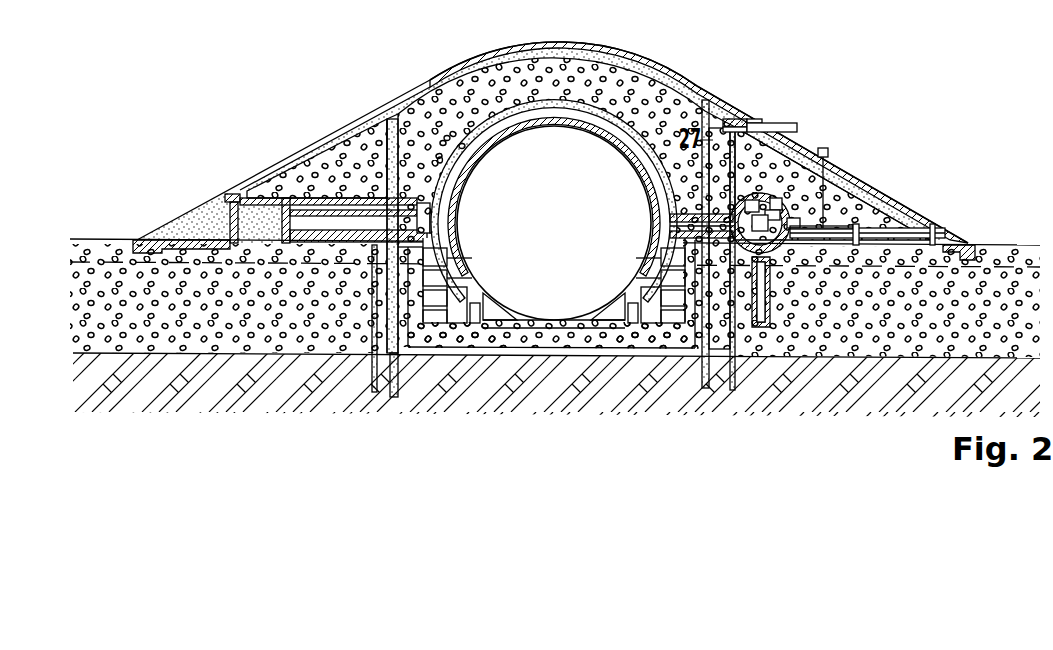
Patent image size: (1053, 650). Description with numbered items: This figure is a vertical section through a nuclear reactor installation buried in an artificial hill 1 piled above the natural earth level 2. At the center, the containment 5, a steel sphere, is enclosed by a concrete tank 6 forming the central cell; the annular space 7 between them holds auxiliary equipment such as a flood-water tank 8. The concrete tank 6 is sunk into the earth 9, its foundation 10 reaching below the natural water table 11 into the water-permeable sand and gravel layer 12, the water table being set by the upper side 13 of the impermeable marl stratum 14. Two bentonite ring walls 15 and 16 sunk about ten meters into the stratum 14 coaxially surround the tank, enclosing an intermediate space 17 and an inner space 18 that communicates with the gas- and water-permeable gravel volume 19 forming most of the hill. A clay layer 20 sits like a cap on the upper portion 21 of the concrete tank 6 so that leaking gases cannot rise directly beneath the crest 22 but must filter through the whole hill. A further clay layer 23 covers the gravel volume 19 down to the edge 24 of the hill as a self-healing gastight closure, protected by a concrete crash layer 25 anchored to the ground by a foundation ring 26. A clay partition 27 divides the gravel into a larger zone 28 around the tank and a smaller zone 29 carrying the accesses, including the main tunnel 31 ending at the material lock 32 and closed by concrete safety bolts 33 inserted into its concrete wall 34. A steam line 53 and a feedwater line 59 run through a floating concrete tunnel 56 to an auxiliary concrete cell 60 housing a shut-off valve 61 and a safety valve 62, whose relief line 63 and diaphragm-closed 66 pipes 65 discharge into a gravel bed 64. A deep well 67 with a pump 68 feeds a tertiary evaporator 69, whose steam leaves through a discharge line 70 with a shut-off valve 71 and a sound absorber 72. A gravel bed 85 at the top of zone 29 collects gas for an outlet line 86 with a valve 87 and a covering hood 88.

The hill 1 is at (402, 100).
The natural earth level 2 is at (125, 238).
The containment 5 is at (522, 132).
The concrete tank 6 is at (600, 125).
The annular space 7 is at (640, 270).
The flood-water tank 8 is at (473, 287).
The earth 9 is at (159, 303).
The foundation 10 is at (393, 340).
The natural water table 11 is at (93, 262).
The sand and gravel layer 12 is at (555, 294).
The upper side of marl stratum 13 is at (262, 355).
The marl stratum 14 is at (308, 370).
The ring wall 15 is at (374, 393).
The ring wall 16 is at (397, 397).
The intermediate space 17 is at (373, 318).
The inner space 18 is at (372, 297).
The gravel volume 19 is at (533, 78).
The clay layer 20 is at (502, 118).
The upper portion of concrete tank 21 is at (487, 140).
The crest of hill 22 is at (607, 46).
The clay layer 23 is at (488, 54).
The edge of hill 24 is at (907, 223).
The concrete layer 25 is at (672, 75).
The foundation ring 26 is at (965, 247).
The vertical partition 27 is at (398, 144).
The larger zone 28 is at (452, 133).
The smaller zone 29 is at (720, 163).
The main tunnel 31 is at (313, 198).
The material lock 32 is at (470, 233).
The safety bolt 33 is at (232, 195).
The concrete wall of main tunnel 34 is at (272, 250).
The steam line 53 is at (787, 238).
The tunnel 56 is at (857, 227).
The feedwater line 59 is at (812, 240).
The concrete cell 60 is at (773, 190).
The shut-off valve 61 is at (745, 215).
The safety valve 62 is at (719, 238).
The relief line 63 is at (743, 270).
The gravel bed 64 is at (800, 222).
The pipe 65 is at (812, 210).
The diaphragm 66 is at (795, 207).
The deep well 67 is at (770, 310).
The pump 68 is at (766, 268).
The tertiary evaporator 69 is at (758, 207).
The discharge line 70 is at (842, 229).
The shut-off valve 71 is at (777, 207).
The sound absorber 72 is at (828, 152).
The gravel bed 85 is at (727, 120).
The outlet line 86 is at (745, 122).
The valve 87 is at (762, 120).
The covering hood 88 is at (790, 125).